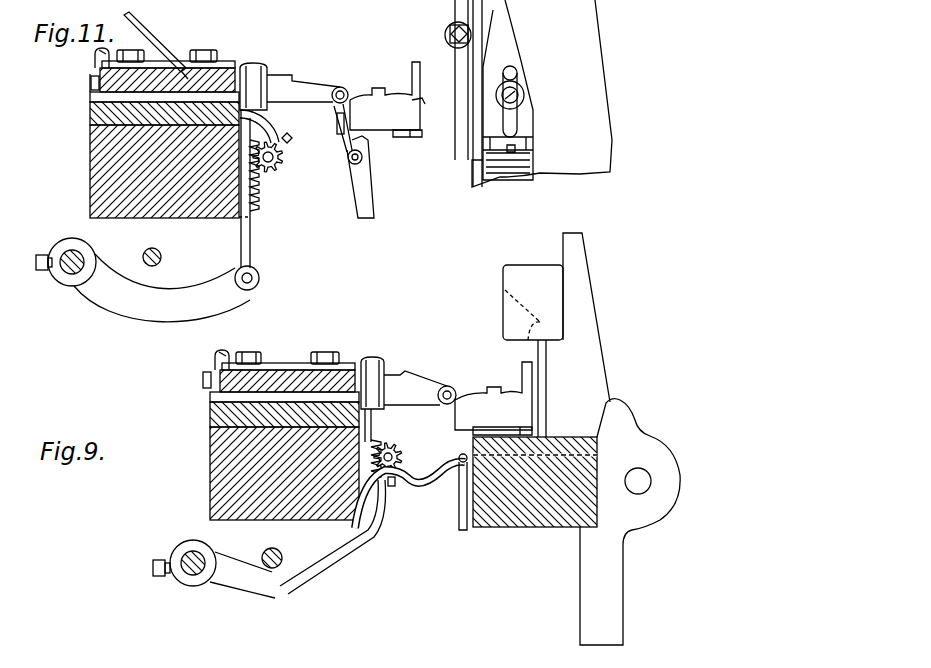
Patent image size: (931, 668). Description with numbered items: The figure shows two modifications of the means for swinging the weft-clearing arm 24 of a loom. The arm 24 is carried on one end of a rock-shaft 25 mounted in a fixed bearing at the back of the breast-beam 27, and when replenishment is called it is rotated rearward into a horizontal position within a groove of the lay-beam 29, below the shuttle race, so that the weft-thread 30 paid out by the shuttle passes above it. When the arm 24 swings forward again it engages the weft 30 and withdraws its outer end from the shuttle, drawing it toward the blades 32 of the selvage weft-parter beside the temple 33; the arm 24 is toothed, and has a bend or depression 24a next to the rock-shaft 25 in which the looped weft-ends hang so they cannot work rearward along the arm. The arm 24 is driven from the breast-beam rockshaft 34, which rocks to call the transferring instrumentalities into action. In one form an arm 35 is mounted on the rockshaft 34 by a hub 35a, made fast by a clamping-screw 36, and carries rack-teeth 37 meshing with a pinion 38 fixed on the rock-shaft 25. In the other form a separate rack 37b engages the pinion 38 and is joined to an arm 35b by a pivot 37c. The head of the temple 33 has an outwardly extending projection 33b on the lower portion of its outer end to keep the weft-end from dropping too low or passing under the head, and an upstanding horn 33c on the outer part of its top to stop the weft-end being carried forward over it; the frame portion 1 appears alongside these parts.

In FIG. 11, the machine frame 1 is at (482, 163).
In FIG. 11, the swinging arm 24 is at (148, 36).
In FIG. 11, the bend or depression 24a is at (265, 127).
In FIG. 9, the bend or depression 24a is at (412, 474).
In FIG. 11, the rock-shaft 25 is at (276, 160).
In FIG. 9, the rock-shaft 25 is at (393, 444).
In FIG. 11, the breast-beam 27 is at (90, 176).
In FIG. 9, the breast-beam 27 is at (281, 435).
In FIG. 9, the lay-beam 29 is at (533, 520).
In FIG. 11, the weft-thread 30 is at (493, 13).
In FIG. 11, the blades of the selvage weft-parter 32 is at (420, 100).
In FIG. 11, the temple 33 is at (318, 82).
In FIG. 9, the temple 33 is at (420, 380).
In FIG. 11, the outwardly extending projection 33b is at (412, 140).
In FIG. 9, the outwardly extending projection 33b is at (532, 430).
In FIG. 11, the upstanding horn 33c is at (410, 72).
In FIG. 9, the upstanding horn 33c is at (523, 376).
In FIG. 11, the breast-beam rockshaft 34 is at (73, 272).
In FIG. 9, the breast-beam rockshaft 34 is at (190, 577).
In FIG. 9, the arm 35 is at (280, 596).
In FIG. 11, the hub 35a is at (72, 238).
In FIG. 9, the hub 35a is at (178, 545).
In FIG. 11, the arm 35b is at (156, 312).
In FIG. 11, the clamping-screw 36 is at (40, 272).
In FIG. 9, the clamping-screw 36 is at (150, 569).
In FIG. 11, the rack-teeth 37 is at (253, 165).
In FIG. 9, the rack-teeth 37 is at (363, 436).
In FIG. 11, the rack 37b is at (255, 207).
In FIG. 11, the pivot 37c is at (262, 279).
In FIG. 11, the pinion 38 is at (270, 165).
In FIG. 9, the pinion 38 is at (412, 466).